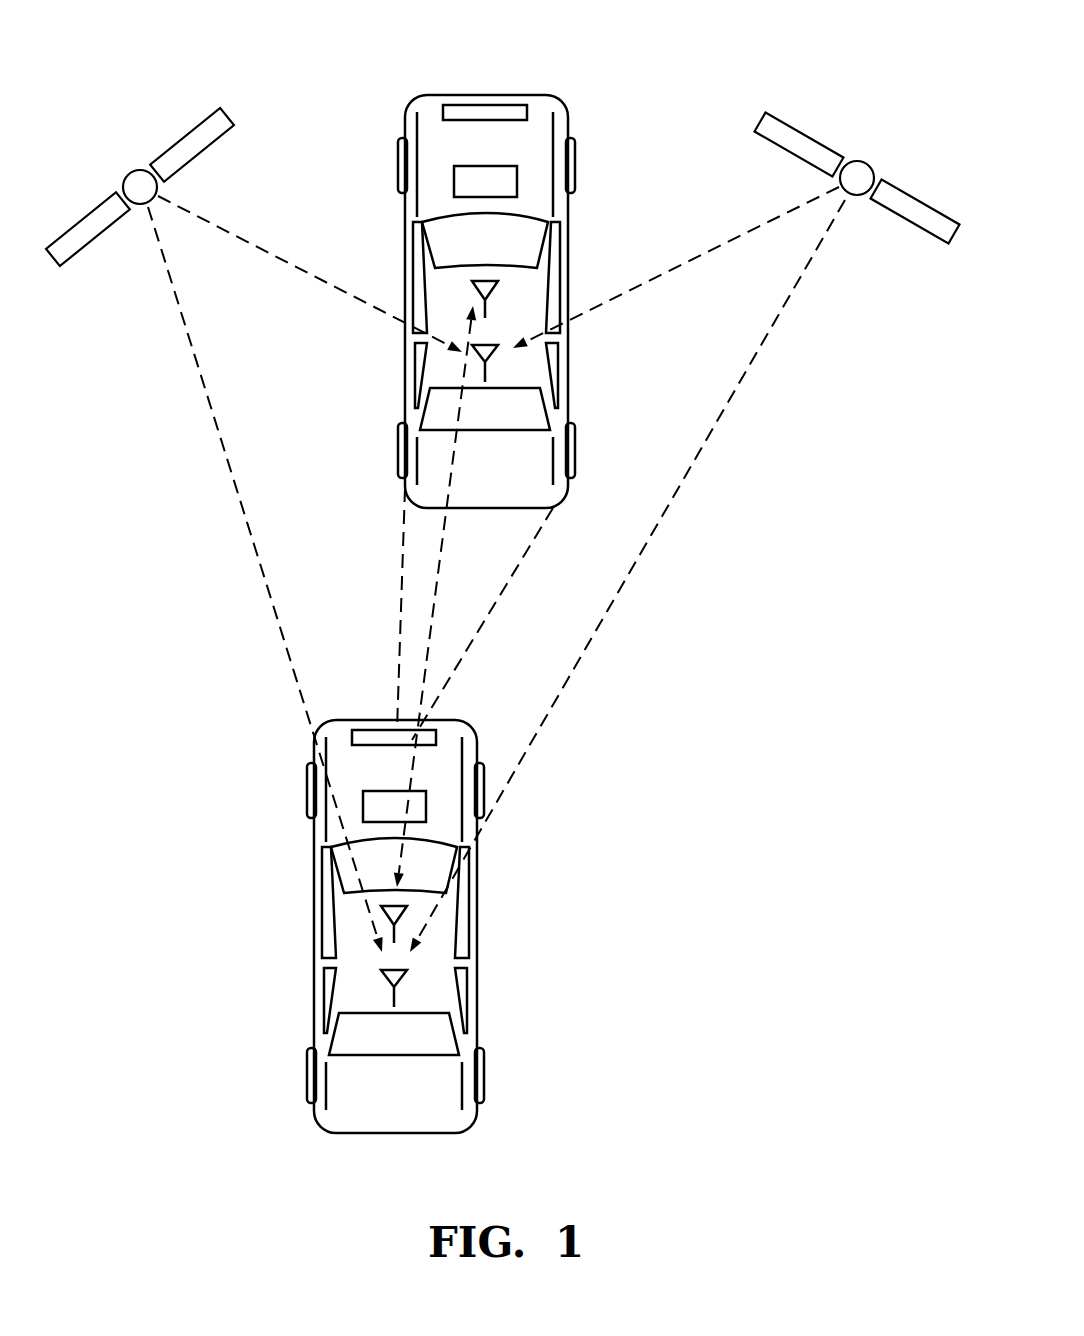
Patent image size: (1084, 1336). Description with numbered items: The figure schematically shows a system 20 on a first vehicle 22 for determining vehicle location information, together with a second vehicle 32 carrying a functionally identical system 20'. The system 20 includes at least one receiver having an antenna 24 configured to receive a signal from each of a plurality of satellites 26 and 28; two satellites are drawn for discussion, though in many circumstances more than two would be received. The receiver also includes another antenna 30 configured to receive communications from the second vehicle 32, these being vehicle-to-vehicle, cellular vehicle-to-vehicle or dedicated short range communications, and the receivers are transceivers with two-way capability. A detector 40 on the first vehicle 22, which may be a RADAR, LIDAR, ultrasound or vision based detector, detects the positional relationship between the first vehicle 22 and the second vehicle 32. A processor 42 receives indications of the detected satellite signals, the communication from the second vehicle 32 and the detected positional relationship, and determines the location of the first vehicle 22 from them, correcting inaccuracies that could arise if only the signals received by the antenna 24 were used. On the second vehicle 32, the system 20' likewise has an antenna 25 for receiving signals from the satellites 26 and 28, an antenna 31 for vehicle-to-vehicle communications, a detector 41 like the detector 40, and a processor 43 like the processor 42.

The system 20 is at (379, 885).
The system 20' is at (455, 260).
The first vehicle 22 is at (440, 926).
The antenna 24 is at (454, 998).
The antenna 25 is at (497, 350).
The satellite 26 is at (862, 164).
The satellite 28 is at (135, 172).
The antenna 30 is at (324, 935).
The antenna 31 is at (497, 289).
The second vehicle 32 is at (540, 197).
The detector 40 is at (387, 691).
The detector 41 is at (500, 106).
The processor 42 is at (366, 747).
The processor 43 is at (463, 168).